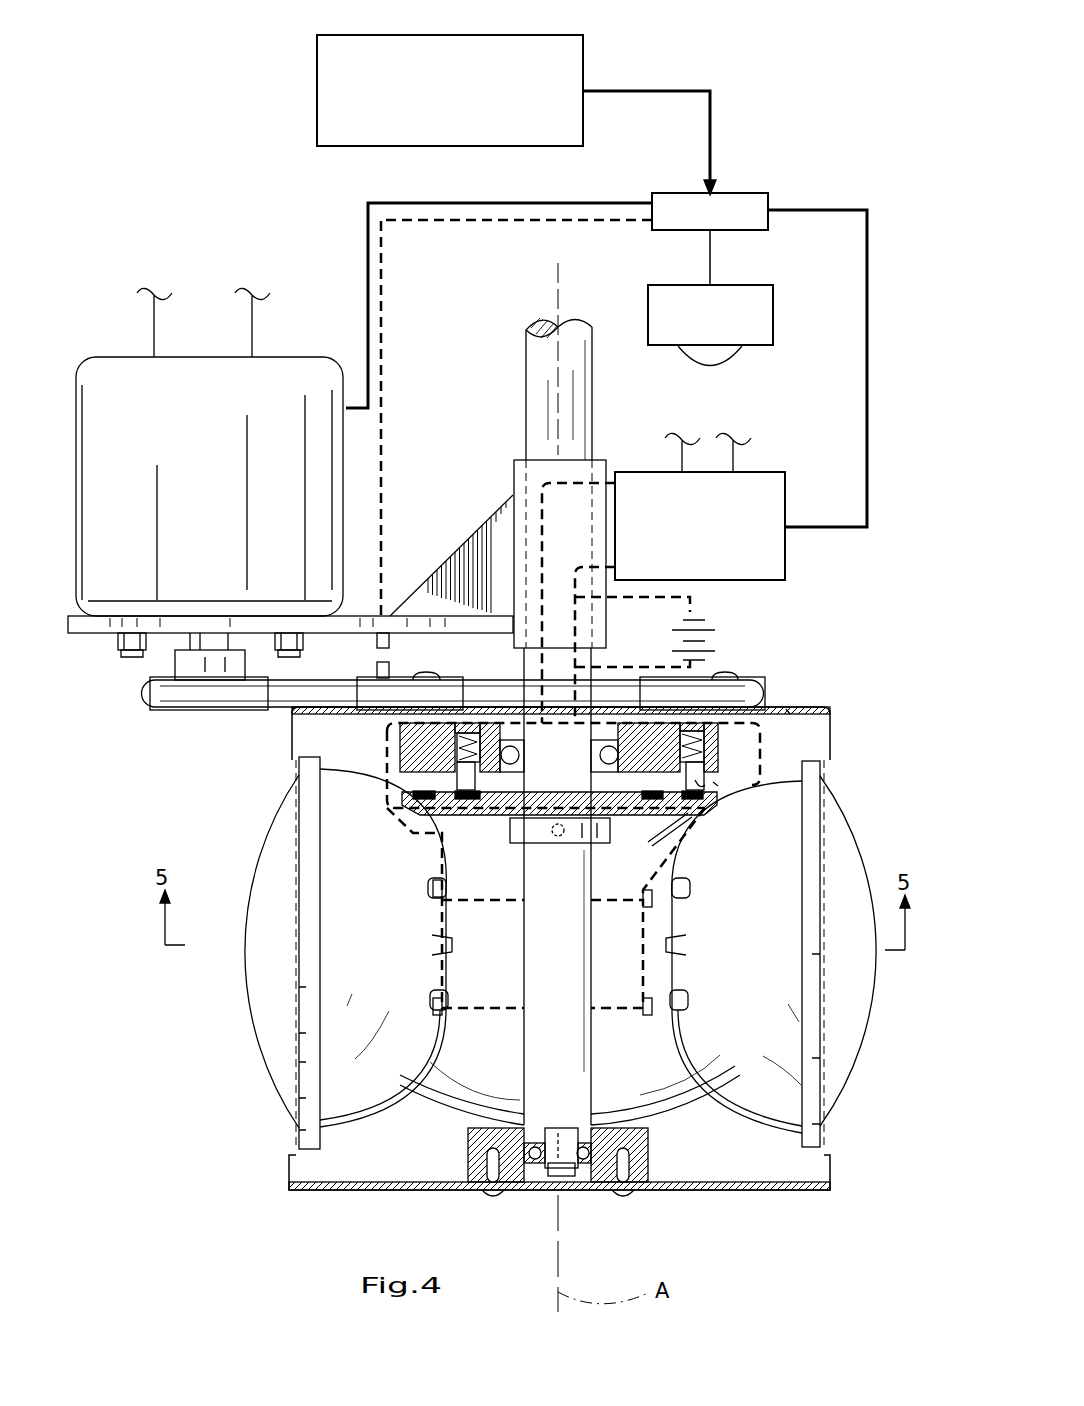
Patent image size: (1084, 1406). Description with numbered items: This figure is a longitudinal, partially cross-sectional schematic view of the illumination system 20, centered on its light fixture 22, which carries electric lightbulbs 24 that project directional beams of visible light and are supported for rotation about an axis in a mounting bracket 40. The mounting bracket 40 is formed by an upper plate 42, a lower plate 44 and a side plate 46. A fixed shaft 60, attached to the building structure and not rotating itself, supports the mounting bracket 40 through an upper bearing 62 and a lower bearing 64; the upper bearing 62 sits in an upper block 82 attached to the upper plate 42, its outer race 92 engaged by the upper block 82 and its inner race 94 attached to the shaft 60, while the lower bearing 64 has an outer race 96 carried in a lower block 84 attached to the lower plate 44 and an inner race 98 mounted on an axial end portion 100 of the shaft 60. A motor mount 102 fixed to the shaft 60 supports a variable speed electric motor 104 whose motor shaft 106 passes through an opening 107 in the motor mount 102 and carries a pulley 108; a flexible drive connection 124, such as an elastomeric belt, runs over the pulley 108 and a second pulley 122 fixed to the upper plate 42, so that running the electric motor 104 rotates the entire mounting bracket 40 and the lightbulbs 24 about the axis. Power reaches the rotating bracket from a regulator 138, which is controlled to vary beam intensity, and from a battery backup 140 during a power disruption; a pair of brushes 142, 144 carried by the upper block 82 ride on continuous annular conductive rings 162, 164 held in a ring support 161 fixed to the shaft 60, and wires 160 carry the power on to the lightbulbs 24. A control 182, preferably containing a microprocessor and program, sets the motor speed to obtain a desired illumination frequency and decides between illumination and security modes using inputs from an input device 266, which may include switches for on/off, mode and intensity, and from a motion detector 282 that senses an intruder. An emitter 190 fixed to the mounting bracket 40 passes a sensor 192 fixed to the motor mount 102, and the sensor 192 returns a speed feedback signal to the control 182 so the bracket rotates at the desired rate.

The illumination system 20 is at (288, 243).
The light fixture 22 is at (868, 706).
The lightbulb 24 is at (858, 862).
The mounting bracket 40 is at (822, 703).
The upper plate 42 is at (786, 709).
The lower plate 44 is at (755, 1192).
The side plate 46 is at (294, 1137).
The shaft 60 is at (582, 410).
The upper bearing 62 is at (494, 742).
The lower bearing 64 is at (527, 1192).
The upper block 82 is at (413, 722).
The lower block 84 is at (477, 1182).
The outer race 92 is at (532, 845).
The inner race 94 is at (516, 748).
The outer race 96 is at (650, 1152).
The inner race 98 is at (580, 1170).
The axial end portion 100 is at (548, 1177).
The motor mount 102 is at (358, 632).
The electric motor 104 is at (278, 368).
The motor shaft 106 is at (195, 655).
The opening 107 is at (178, 624).
The pulley 108 is at (197, 670).
The pulley 122 is at (732, 683).
The flexible drive connection 124 is at (283, 697).
The regulator 138 is at (770, 475).
The battery backup 140 is at (718, 612).
The brush 142 is at (713, 782).
The brush 144 is at (463, 782).
The wires 160 is at (475, 900).
The ring support 161 is at (695, 780).
The conductive ring 162 is at (649, 841).
The conductive ring 164 is at (463, 797).
The control 182 is at (745, 192).
The emitter 190 is at (388, 670).
The sensor 192 is at (383, 631).
The input device 266 is at (570, 63).
The motion detector 282 is at (755, 347).